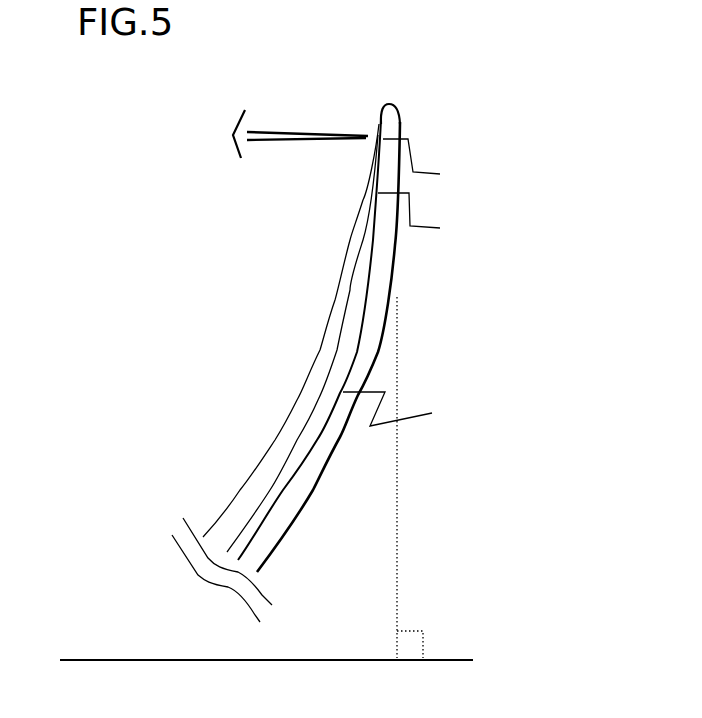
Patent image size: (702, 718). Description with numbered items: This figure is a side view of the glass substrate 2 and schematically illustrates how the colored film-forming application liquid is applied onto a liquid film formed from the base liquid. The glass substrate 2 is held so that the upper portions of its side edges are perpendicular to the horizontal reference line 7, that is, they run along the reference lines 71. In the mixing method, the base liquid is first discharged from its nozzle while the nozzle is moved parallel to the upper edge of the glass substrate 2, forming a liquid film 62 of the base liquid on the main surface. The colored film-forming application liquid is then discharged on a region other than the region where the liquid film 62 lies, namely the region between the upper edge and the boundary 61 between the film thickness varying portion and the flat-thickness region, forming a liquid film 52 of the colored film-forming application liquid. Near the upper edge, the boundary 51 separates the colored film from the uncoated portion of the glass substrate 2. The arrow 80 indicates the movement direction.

The glass substrate 2 is at (288, 509).
The boundary 51 is at (431, 163).
The liquid film of the colored film-forming application liquid 52 is at (290, 427).
The boundary 61 is at (429, 217).
The liquid film of the base liquid 62 is at (406, 409).
The reference line 7 is at (284, 659).
The reference lines 71 is at (415, 477).
The movement direction arrow 80 is at (322, 131).